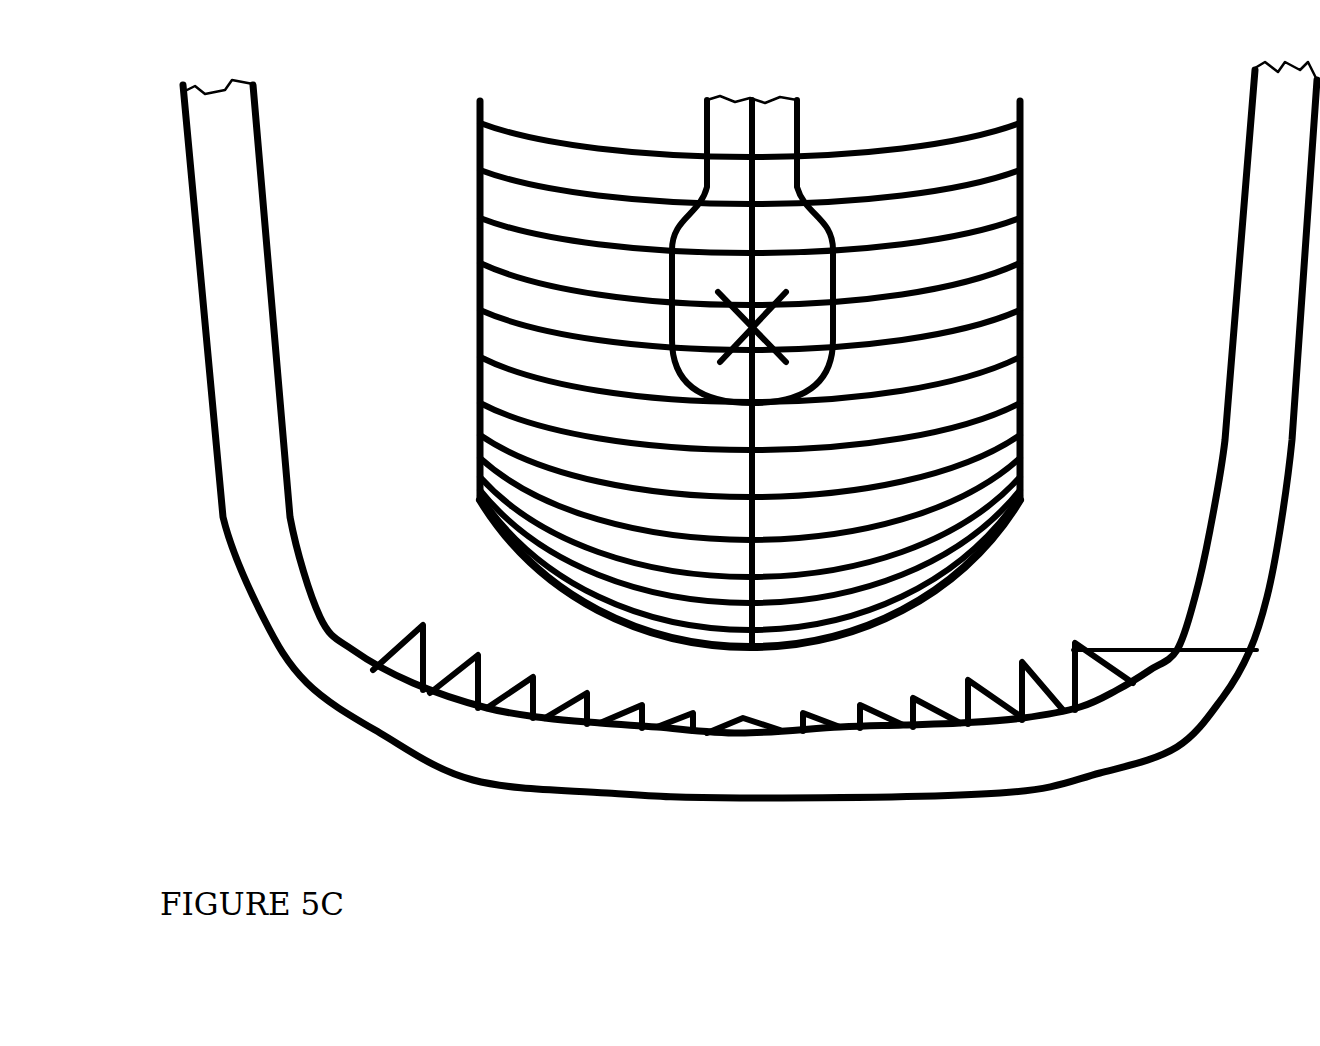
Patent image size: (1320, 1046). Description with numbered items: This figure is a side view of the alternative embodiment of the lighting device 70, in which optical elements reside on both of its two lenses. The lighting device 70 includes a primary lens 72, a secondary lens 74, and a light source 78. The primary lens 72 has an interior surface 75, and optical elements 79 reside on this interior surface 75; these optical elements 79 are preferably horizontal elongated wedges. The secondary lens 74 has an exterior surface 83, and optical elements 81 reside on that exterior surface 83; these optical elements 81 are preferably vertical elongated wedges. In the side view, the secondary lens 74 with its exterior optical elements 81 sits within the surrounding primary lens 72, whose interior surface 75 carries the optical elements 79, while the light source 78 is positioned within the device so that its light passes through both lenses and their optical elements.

The lighting device 70 is at (1222, 830).
The primary lens 72 is at (970, 795).
The secondary lens 74 is at (1020, 262).
The interior surface 75 is at (477, 253).
The light source 78 is at (702, 140).
The optical elements 79 is at (707, 720).
The optical elements 81 is at (1090, 643).
The exterior surface 83 is at (488, 700).